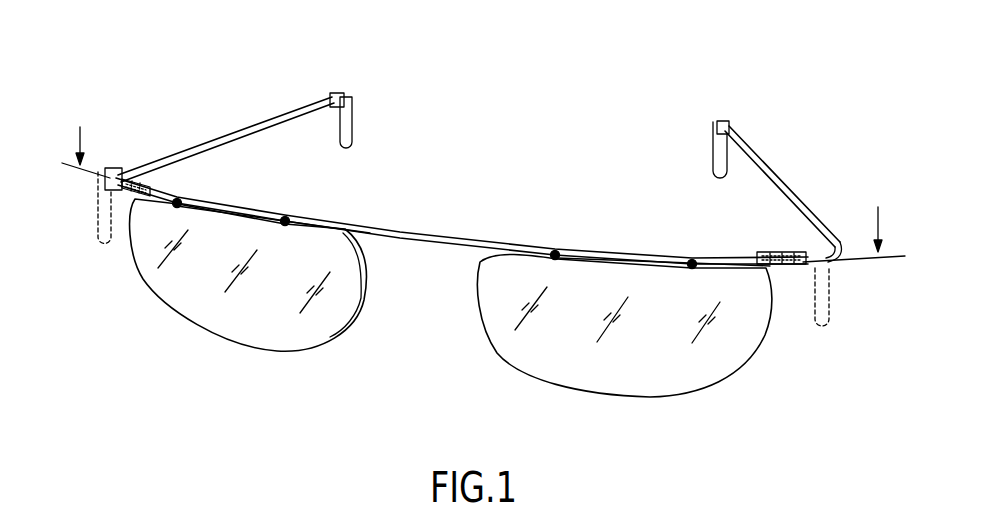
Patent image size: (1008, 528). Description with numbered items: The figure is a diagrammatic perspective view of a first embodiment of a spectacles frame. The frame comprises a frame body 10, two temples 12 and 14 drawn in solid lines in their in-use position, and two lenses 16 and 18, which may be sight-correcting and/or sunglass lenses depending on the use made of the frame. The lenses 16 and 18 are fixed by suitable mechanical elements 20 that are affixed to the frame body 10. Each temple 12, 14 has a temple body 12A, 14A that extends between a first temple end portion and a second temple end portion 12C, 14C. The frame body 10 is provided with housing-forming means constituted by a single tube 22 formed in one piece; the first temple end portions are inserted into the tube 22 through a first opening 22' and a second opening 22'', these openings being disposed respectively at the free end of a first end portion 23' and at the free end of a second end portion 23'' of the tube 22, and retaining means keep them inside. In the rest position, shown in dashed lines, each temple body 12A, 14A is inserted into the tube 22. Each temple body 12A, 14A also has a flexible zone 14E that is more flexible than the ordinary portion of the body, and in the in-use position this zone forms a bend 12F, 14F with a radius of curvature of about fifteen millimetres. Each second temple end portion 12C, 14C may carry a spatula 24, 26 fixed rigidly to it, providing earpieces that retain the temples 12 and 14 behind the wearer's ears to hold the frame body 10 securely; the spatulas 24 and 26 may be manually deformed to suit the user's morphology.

The frame body 10 is at (536, 98).
The temple 12 is at (188, 122).
The temple body 12A is at (243, 124).
The second temple end portion 12C is at (331, 97).
The bend 12F is at (104, 168).
The temple 14 is at (790, 162).
The temple body 14A is at (773, 189).
The second temple end portion 14C is at (729, 132).
The flexible zone 14E is at (839, 238).
The bend 14F is at (843, 258).
The lens 16 is at (224, 333).
The lens 18 is at (594, 382).
The mechanical elements 20 is at (288, 218).
The tube 22 is at (462, 221).
The first opening 22' is at (101, 219).
The second opening 22'' is at (779, 238).
The first end portion 23' is at (130, 174).
The second end portion 23'' is at (806, 314).
The spatula 24 is at (352, 98).
The spatula 26 is at (716, 124).